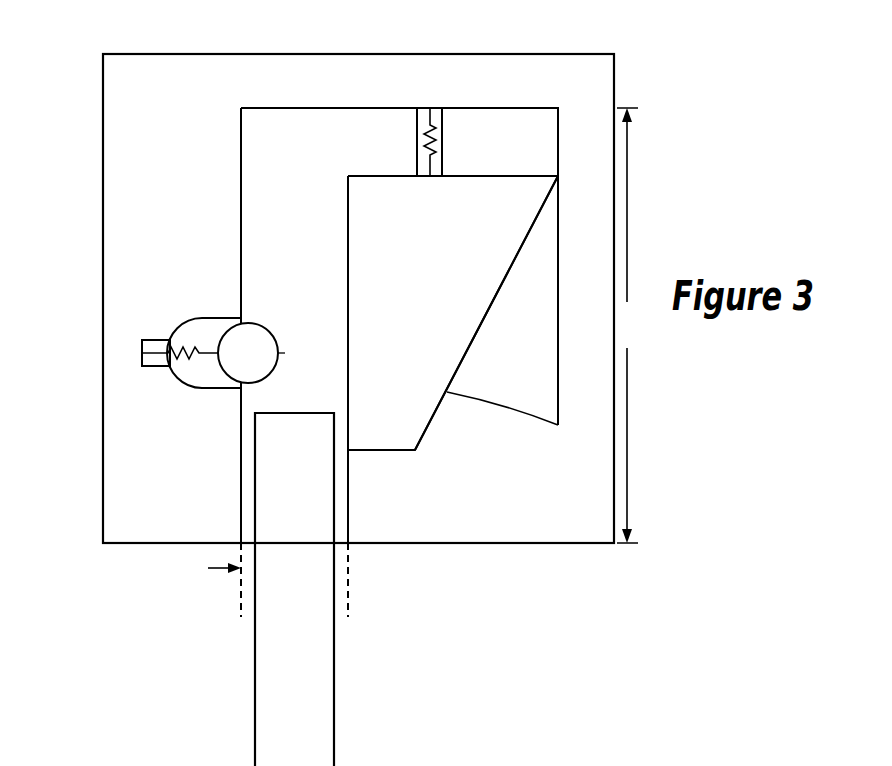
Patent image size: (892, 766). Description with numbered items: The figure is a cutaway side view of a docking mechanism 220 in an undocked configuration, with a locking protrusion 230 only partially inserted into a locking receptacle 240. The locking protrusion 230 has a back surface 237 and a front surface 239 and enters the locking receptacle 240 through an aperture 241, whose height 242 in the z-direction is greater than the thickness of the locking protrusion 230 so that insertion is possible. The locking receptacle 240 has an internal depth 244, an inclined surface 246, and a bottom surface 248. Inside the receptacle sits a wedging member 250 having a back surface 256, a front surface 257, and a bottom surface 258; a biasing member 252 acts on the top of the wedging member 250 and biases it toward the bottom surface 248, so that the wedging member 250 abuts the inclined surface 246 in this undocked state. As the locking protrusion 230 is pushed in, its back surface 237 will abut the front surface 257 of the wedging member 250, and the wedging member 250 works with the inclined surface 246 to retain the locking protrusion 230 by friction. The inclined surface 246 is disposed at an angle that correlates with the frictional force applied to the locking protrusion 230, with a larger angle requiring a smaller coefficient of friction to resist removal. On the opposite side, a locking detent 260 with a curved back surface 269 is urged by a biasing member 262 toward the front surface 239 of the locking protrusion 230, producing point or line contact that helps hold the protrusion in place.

The docking mechanism 220 is at (100, 44).
The locking protrusion 230 is at (294, 589).
The back surface 237 is at (334, 519).
The front surface 239 is at (256, 456).
The locking receptacle 240 is at (140, 568).
The aperture 241 is at (232, 601).
The height 242 is at (360, 568).
The internal depth 244 is at (633, 325).
The inclined surface 246 is at (484, 323).
The bottom surface 248 is at (362, 452).
The wedging member 250 is at (453, 313).
The biasing member 252 is at (445, 143).
The back surface 256 is at (481, 321).
The front surface 257 is at (349, 320).
The bottom surface 258 is at (383, 449).
The locking detent 260 is at (222, 353).
The biasing member 262 is at (151, 340).
The back surface 269 is at (279, 340).